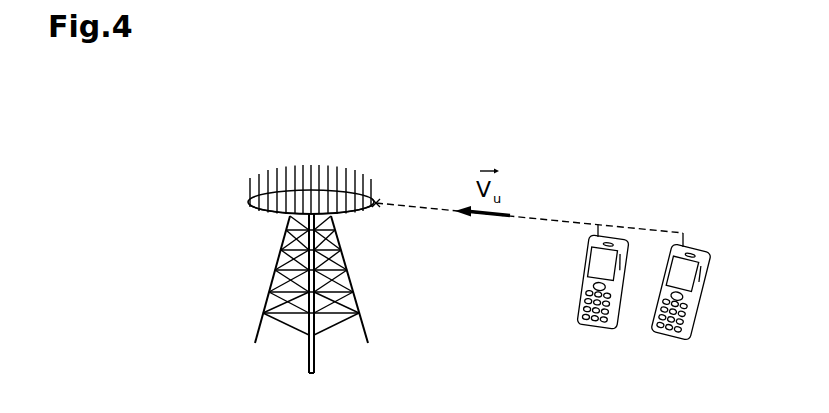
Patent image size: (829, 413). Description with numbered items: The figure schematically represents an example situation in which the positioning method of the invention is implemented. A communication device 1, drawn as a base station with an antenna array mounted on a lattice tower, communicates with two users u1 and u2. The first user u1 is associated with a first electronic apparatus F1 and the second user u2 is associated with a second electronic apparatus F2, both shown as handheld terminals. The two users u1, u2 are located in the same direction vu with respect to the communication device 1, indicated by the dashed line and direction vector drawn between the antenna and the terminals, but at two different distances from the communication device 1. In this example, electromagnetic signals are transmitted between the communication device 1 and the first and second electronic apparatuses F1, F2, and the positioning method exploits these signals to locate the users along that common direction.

The communication device 1 is at (226, 181).
The first user u1 is at (603, 264).
The second user u2 is at (683, 275).
The first electronic apparatus F1 is at (595, 356).
The second electronic apparatus F2 is at (673, 368).